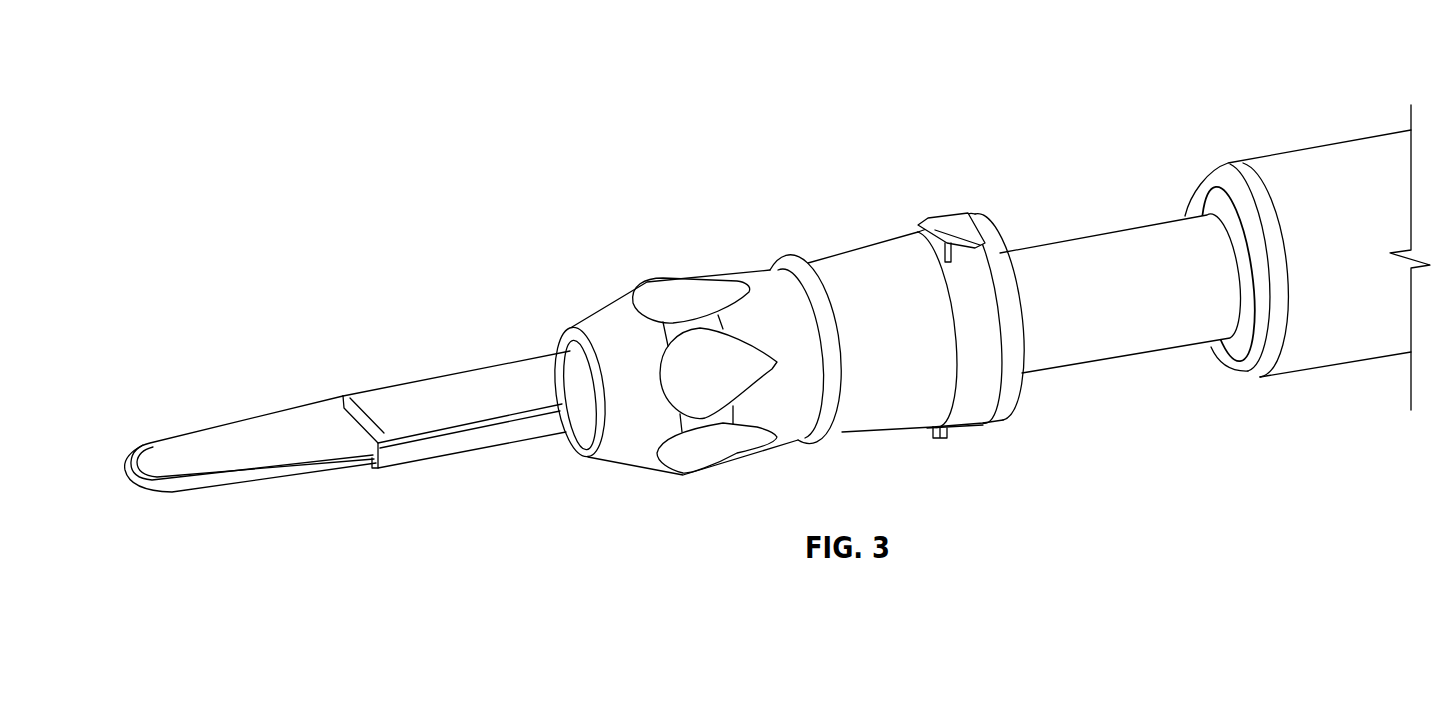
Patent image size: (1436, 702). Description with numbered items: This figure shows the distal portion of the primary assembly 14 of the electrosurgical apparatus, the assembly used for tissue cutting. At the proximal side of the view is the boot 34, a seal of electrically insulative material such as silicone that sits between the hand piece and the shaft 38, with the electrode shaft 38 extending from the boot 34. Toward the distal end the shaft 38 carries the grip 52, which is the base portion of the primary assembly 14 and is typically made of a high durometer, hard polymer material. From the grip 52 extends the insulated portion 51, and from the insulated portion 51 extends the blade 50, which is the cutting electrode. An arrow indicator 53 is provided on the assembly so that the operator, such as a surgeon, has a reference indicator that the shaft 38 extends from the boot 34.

The primary assembly 14 is at (285, 218).
The boot 34 is at (1293, 168).
The shaft 38 is at (1107, 243).
The blade 50 is at (185, 447).
The insulated portion 51 is at (413, 392).
The grip 52 is at (672, 292).
The arrow indicator 53 is at (960, 227).